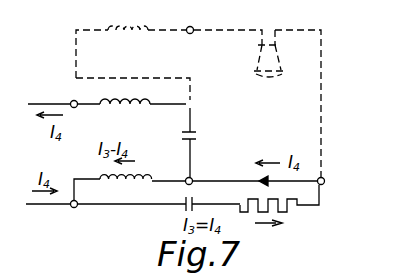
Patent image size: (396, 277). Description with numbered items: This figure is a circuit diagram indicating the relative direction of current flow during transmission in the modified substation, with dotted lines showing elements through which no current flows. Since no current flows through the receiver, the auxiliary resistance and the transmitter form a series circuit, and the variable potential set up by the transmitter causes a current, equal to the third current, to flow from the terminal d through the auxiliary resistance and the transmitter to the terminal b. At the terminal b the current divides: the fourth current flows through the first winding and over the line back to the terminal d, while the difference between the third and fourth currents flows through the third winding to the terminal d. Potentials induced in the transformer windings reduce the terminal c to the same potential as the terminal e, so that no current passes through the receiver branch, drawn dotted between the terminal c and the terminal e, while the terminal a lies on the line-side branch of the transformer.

The terminal a is at (75, 93).
The terminal b is at (196, 170).
The terminal c is at (190, 19).
The terminal d is at (73, 214).
The terminal e is at (329, 182).